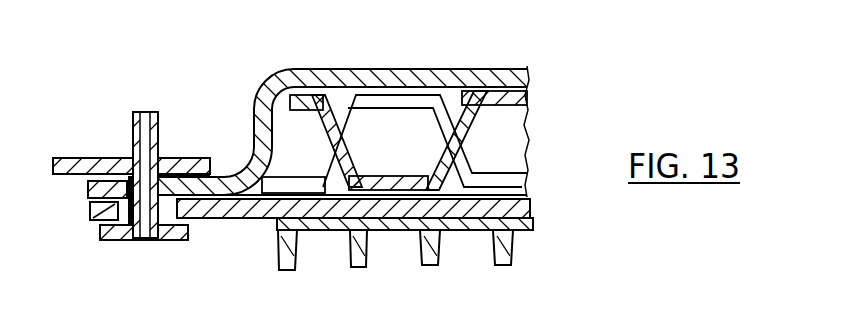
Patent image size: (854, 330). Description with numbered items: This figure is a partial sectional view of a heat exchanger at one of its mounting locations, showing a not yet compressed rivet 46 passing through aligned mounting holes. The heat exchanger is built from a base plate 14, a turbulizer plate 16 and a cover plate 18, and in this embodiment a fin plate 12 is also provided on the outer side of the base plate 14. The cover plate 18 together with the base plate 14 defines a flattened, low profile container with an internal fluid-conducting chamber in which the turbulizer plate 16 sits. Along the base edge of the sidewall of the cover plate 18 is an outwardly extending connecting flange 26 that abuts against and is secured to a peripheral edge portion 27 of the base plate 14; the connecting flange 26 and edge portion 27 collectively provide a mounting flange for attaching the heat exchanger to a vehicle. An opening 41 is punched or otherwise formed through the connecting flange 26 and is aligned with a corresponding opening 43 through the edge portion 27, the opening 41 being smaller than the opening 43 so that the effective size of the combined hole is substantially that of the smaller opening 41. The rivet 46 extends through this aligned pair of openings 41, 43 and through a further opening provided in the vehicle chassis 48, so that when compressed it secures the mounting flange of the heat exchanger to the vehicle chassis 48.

The fin plate 12 is at (297, 250).
The base plate 14 is at (237, 218).
The turbulizer plate 16 is at (483, 93).
The cover plate 18 is at (345, 82).
The connecting flange 26 is at (88, 193).
The peripheral edge portion 27 is at (88, 212).
The opening 41 is at (188, 157).
The opening 43 is at (167, 228).
The rivet 46 is at (157, 142).
The vehicle chassis 48 is at (90, 158).